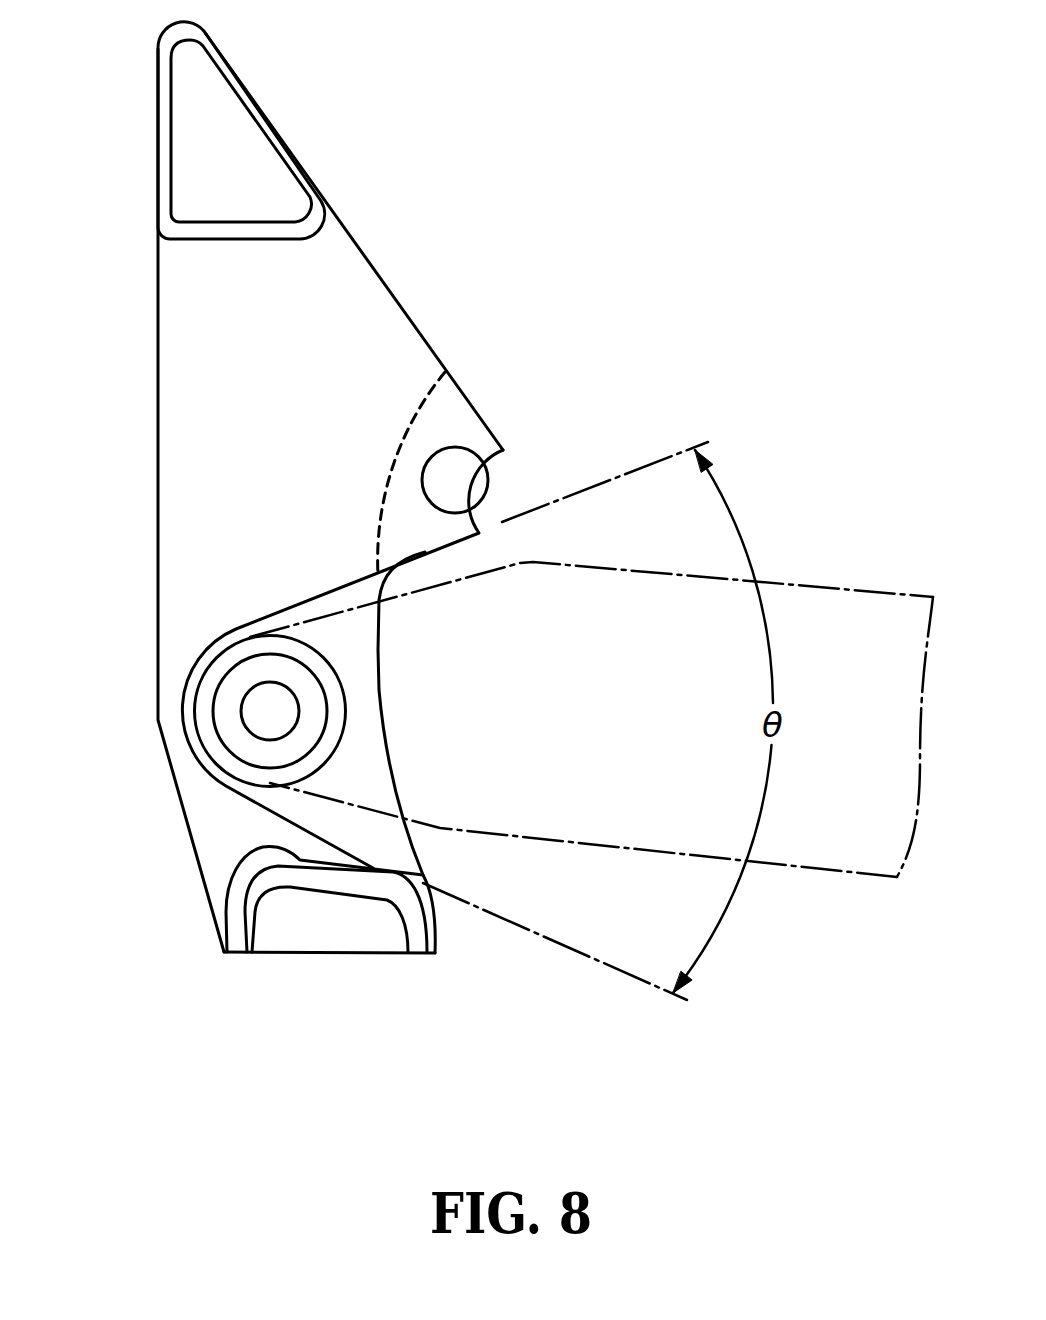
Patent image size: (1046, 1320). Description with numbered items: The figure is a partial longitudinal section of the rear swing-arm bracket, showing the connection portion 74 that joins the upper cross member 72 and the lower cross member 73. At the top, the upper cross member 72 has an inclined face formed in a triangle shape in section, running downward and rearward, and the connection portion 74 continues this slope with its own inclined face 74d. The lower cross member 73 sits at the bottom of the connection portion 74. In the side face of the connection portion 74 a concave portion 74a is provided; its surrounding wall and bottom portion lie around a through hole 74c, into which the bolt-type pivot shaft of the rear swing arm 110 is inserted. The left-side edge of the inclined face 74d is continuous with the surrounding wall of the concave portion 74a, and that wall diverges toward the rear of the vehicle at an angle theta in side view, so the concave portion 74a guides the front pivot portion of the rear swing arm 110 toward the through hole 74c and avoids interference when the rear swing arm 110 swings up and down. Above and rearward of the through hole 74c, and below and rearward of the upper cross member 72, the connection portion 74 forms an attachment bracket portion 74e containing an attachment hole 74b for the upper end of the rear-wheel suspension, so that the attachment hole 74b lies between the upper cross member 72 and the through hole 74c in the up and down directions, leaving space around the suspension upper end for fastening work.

The upper cross member 72 is at (220, 97).
The lower cross member 73 is at (262, 848).
The connection portion 74 is at (180, 472).
The concave portion 74a is at (380, 758).
The attachment hole 74b is at (470, 478).
The through hole 74c is at (258, 712).
The inclined face 74d is at (387, 280).
The attachment bracket portion 74e is at (445, 408).
The rear swing arm 110 is at (867, 592).